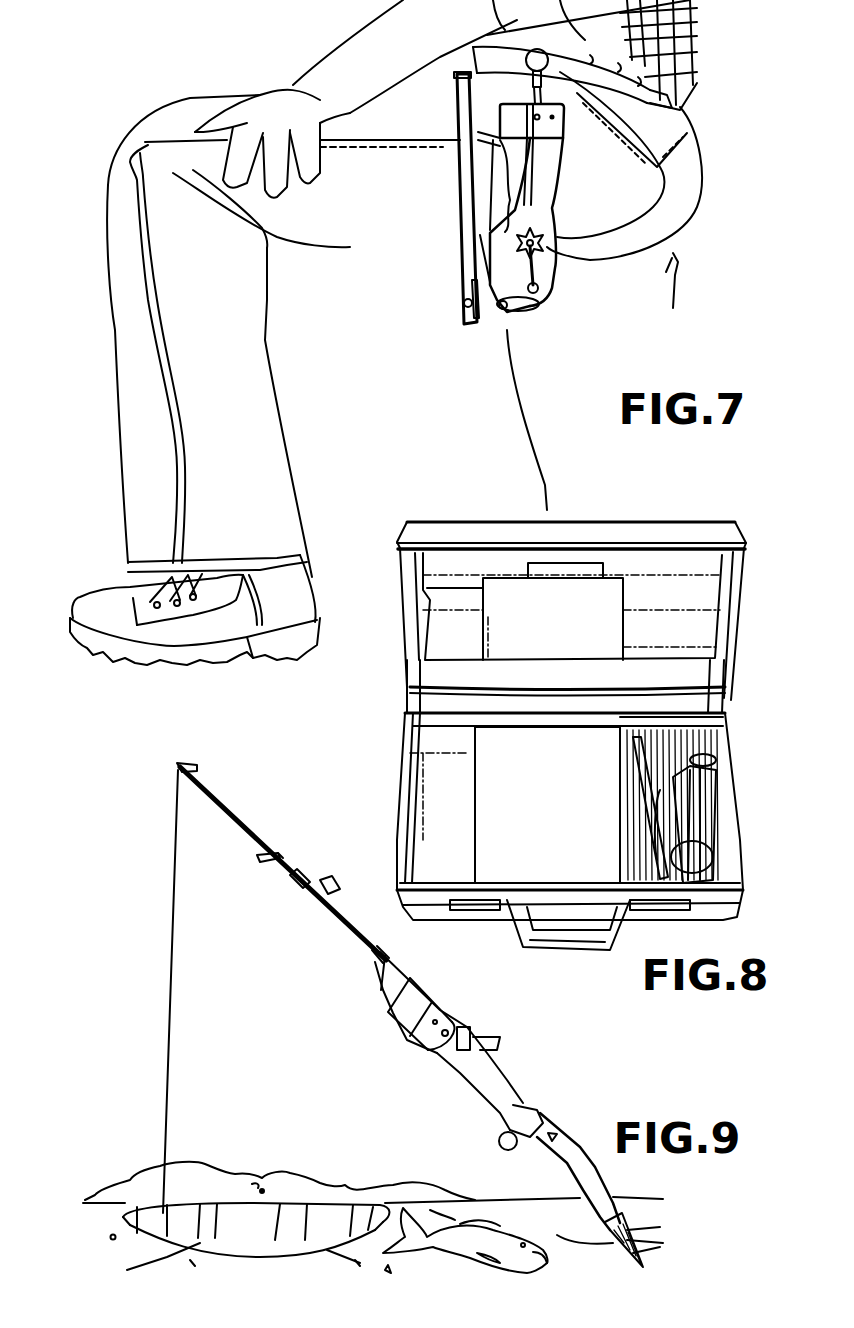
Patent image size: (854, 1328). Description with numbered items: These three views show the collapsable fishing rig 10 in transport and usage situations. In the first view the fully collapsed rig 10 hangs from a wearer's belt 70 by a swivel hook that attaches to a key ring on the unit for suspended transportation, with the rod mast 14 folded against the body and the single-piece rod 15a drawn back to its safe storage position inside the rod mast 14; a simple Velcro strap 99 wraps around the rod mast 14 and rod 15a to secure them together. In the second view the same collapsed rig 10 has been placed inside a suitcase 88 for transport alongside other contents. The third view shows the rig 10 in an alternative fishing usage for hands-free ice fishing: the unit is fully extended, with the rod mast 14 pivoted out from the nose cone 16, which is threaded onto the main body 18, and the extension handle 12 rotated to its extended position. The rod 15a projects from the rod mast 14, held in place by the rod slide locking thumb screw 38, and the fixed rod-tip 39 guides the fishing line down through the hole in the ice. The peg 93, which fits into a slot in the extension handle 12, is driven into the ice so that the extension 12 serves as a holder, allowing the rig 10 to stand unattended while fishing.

In FIG. 7, the collapsable fishing rig 10 is at (586, 186).
In FIG. 8, the collapsable fishing rig 10 is at (723, 780).
In FIG. 9, the collapsable fishing rig 10 is at (444, 1015).
In FIG. 9, the extension handle 12 is at (610, 1169).
In FIG. 7, the rod mast 14 is at (462, 233).
In FIG. 9, the rod mast 14 is at (340, 925).
In FIG. 9, the single-piece rod 15a is at (238, 805).
In FIG. 9, the nose cone 16 is at (443, 992).
In FIG. 9, the main body 18 is at (510, 1073).
In FIG. 9, the rod slide locking thumb screw 38 is at (327, 879).
In FIG. 9, the fixed rod-tip 39 is at (267, 865).
In FIG. 7, the belt 70 is at (683, 80).
In FIG. 8, the suitcase 88 is at (740, 850).
In FIG. 9, the peg 93 is at (627, 1230).
In FIG. 7, the Velcro strap 99 is at (462, 168).